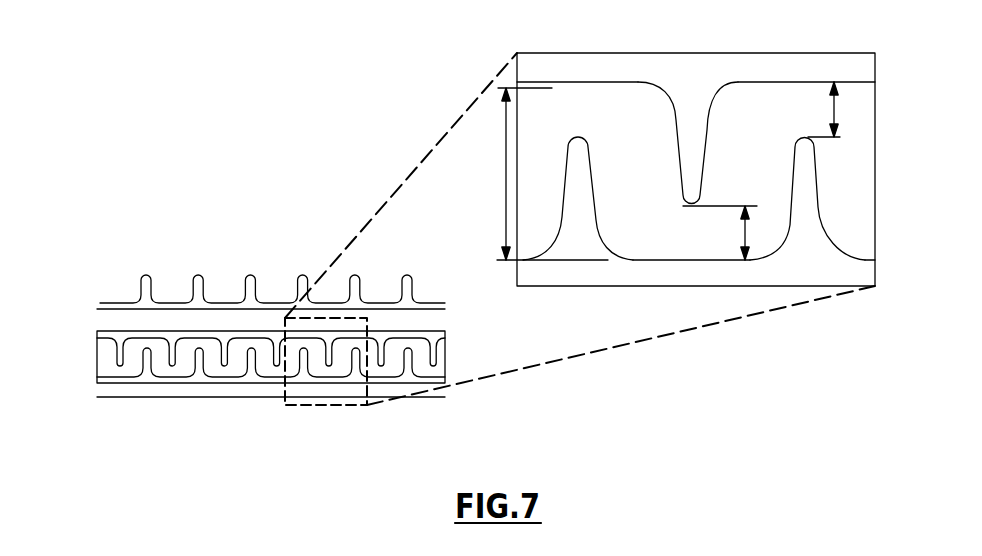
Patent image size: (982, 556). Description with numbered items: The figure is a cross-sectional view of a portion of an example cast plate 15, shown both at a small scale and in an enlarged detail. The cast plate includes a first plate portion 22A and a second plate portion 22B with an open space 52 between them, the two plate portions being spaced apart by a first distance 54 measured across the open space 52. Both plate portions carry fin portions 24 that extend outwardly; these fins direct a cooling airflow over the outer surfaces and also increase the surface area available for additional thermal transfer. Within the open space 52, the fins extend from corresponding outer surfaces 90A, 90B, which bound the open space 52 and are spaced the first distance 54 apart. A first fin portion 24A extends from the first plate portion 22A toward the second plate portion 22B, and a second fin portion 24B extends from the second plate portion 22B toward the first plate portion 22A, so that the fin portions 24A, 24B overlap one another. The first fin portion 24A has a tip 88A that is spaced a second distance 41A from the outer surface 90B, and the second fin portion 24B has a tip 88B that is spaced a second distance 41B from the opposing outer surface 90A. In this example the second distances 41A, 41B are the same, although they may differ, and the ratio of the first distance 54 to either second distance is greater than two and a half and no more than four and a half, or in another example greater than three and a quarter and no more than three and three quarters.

The heat exchanger 15 is at (100, 263).
The first plate portion 22A is at (115, 391).
The second plate portion 22B is at (112, 322).
The fin portions 24 is at (212, 258).
The first fin portion 24A is at (692, 152).
The second fin portion 24B is at (578, 173).
The second distance 41A is at (745, 235).
The second distance 41B is at (838, 110).
The open space 52 is at (107, 355).
The first distance 54 is at (503, 187).
The tip 88A is at (672, 232).
The tip 88B is at (811, 115).
The outer surface 90A is at (619, 101).
The outer surface 90B is at (624, 240).